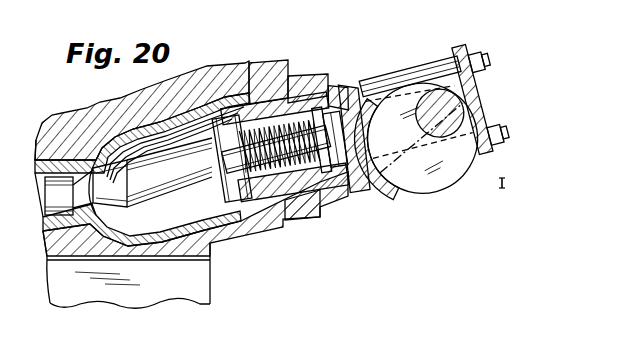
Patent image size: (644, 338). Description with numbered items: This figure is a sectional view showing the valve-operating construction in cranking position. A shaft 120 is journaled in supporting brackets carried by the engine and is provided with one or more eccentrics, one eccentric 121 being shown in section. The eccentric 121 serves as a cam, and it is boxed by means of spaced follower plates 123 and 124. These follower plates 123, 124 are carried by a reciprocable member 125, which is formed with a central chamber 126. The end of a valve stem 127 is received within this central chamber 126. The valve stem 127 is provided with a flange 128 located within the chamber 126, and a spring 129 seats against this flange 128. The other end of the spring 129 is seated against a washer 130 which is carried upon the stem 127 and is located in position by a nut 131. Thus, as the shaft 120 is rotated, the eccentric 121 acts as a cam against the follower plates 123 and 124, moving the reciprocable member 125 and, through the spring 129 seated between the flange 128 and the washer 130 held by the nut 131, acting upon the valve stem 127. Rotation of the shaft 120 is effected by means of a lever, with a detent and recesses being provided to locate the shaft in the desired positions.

The shaft 120 is at (449, 138).
The eccentric 121 is at (411, 187).
The follower plate 123 is at (361, 88).
The follower plate 124 is at (481, 104).
The reciprocable member 125 is at (253, 64).
The central chamber 126 is at (310, 80).
The valve stem 127 is at (262, 213).
The flange 128 is at (243, 230).
The spring 129 is at (324, 202).
The washer 130 is at (336, 86).
The nut 131 is at (356, 181).